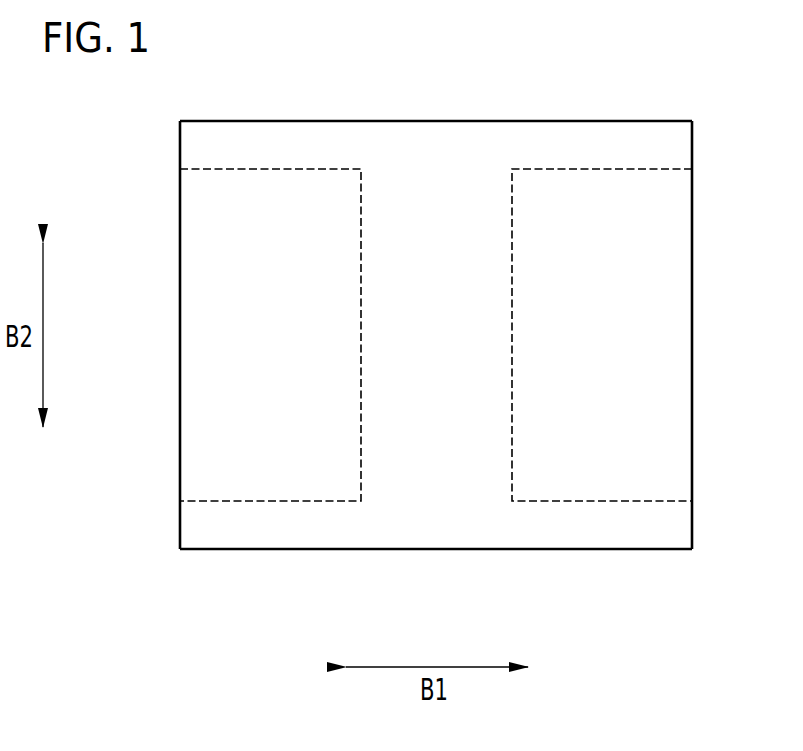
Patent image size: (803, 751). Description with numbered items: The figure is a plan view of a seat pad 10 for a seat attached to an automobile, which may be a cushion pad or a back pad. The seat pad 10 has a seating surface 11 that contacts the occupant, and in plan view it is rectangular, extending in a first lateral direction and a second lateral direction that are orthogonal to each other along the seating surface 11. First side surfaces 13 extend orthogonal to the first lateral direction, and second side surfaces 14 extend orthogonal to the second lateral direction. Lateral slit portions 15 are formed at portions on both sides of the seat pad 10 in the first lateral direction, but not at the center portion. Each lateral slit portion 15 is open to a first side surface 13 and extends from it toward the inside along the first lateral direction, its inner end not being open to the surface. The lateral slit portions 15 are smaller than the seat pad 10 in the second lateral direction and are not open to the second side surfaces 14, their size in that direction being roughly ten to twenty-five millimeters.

The seat pad 10 is at (438, 310).
The seating surface 11 is at (475, 143).
The first side surface 13 is at (180, 522).
The second side surface 14 is at (401, 120).
The lateral slit portion 15 is at (225, 501).